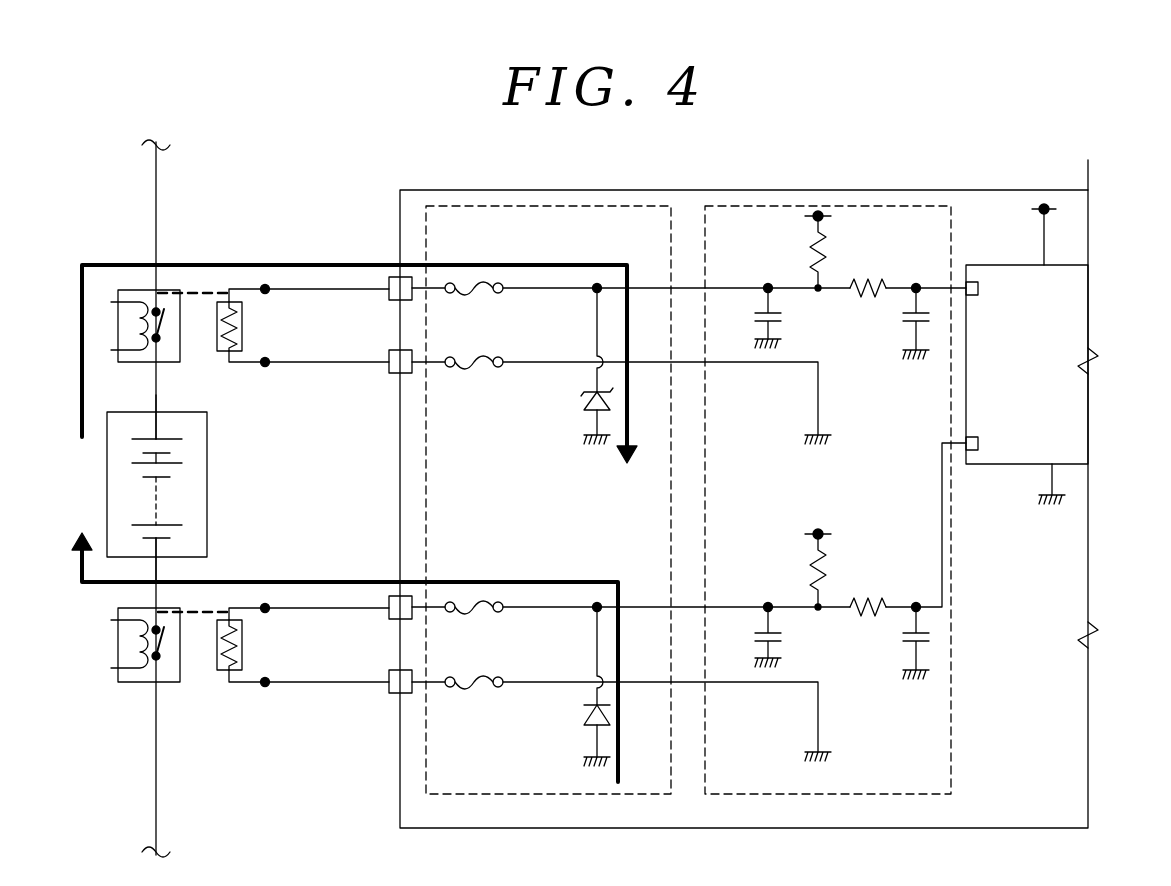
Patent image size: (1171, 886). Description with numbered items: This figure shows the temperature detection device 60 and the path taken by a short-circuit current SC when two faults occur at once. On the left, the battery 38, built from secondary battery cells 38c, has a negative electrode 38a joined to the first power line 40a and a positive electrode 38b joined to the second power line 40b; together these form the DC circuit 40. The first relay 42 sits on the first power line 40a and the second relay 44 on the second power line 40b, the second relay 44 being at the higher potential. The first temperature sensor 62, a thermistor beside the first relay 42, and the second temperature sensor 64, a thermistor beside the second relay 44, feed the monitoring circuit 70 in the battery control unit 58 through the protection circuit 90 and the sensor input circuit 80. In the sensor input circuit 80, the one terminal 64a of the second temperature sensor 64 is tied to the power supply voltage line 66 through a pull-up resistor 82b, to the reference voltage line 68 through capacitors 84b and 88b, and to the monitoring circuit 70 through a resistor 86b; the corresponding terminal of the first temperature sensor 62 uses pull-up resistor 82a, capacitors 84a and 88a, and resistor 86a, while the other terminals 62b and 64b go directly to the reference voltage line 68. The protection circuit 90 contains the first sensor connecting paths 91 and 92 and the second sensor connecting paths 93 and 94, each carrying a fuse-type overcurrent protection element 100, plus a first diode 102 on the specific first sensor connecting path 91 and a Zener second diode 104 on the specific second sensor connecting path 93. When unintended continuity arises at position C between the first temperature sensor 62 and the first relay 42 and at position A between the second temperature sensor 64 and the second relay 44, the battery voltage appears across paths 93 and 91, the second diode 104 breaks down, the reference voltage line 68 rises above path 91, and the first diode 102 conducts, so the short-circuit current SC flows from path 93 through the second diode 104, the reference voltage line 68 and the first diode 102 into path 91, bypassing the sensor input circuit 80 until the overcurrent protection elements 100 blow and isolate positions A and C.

The battery 38 is at (154, 477).
The negative electrode 38a is at (158, 560).
The positive electrode 38b is at (158, 409).
The secondary battery cells 38c is at (143, 523).
The DC circuit 40 is at (113, 485).
The first power line 40a is at (156, 733).
The second power line 40b is at (156, 232).
The first relay 42 is at (118, 640).
The second relay 44 is at (142, 362).
The battery control unit 58 is at (945, 190).
The temperature detection device 60 is at (376, 204).
The first temperature sensor 62 is at (242, 649).
The other terminal of first temperature sensor 62b is at (265, 682).
The second temperature sensor 64 is at (243, 328).
The one terminal of second temperature sensor 64a is at (265, 287).
The other terminal of second temperature sensor 64b is at (265, 362).
The power supply voltage line 66 is at (818, 213).
The reference voltage line 68 is at (585, 433).
The monitoring circuit 70 is at (1089, 285).
The sensor input circuit 80 is at (746, 204).
The pull-up resistor 82a is at (823, 564).
The pull-up resistor 82b is at (823, 242).
The capacitor 84a is at (908, 648).
The capacitor 84b is at (908, 325).
The resistor 86a is at (868, 612).
The resistor 86b is at (868, 292).
The capacitor 88a is at (760, 633).
The capacitor 88b is at (760, 312).
The protection circuit 90 is at (440, 204).
The specific first sensor connecting path 91 is at (533, 605).
The first sensor connecting path 92 is at (533, 679).
The specific second sensor connecting path 93 is at (533, 287).
The second sensor connecting path 94 is at (533, 361).
The overcurrent protection element 100 is at (490, 277).
The first diode 102 is at (583, 712).
The second diode 104 is at (583, 398).
The short-circuit current SC is at (333, 265).
The position of unintended continuity A is at (202, 288).
The position of unintended continuity C is at (203, 614).